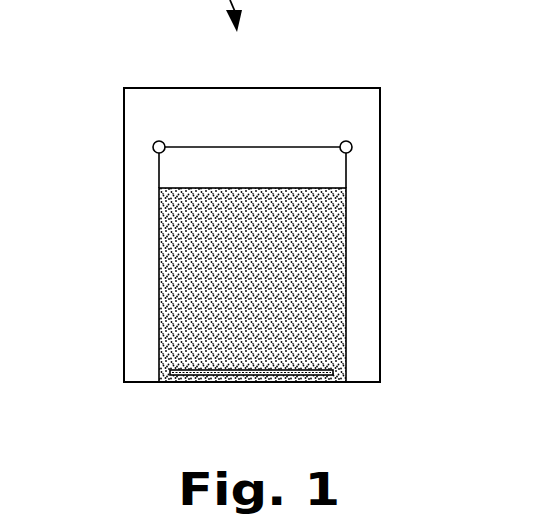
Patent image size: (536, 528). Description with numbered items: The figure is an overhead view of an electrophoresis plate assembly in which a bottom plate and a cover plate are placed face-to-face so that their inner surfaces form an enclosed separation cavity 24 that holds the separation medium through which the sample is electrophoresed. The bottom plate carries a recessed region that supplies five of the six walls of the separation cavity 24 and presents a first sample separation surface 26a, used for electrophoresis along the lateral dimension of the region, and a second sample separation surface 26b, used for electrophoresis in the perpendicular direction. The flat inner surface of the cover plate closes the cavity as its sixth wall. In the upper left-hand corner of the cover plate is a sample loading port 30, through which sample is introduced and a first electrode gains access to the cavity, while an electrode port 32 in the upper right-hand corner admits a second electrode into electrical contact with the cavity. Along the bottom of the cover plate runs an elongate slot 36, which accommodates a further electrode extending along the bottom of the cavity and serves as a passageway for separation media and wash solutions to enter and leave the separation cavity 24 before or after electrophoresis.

The separation cavity 24 is at (341, 186).
The first sample separation surface 26a is at (210, 170).
The second sample separation surface 26b is at (212, 277).
The sample loading port 30 is at (160, 141).
The electrode port 32 is at (346, 141).
The elongate slot 36 is at (188, 383).